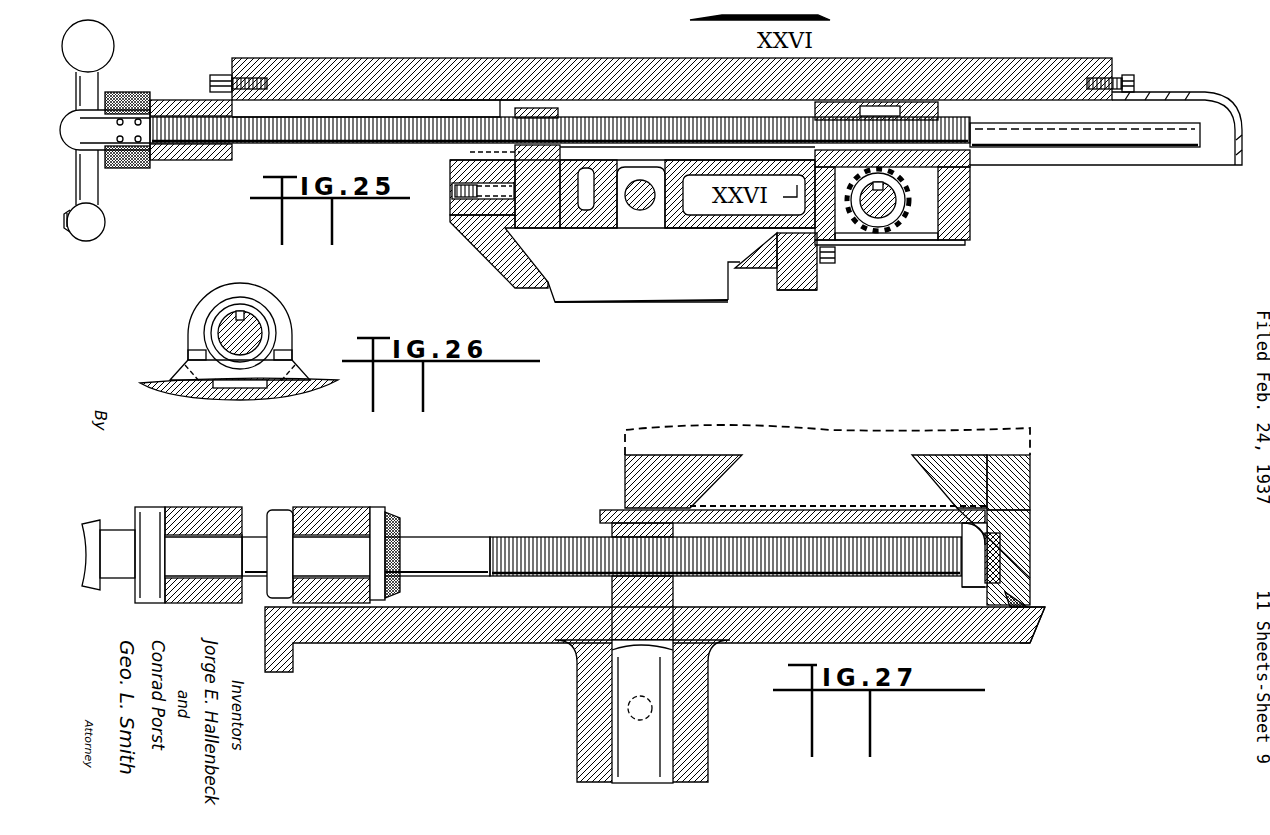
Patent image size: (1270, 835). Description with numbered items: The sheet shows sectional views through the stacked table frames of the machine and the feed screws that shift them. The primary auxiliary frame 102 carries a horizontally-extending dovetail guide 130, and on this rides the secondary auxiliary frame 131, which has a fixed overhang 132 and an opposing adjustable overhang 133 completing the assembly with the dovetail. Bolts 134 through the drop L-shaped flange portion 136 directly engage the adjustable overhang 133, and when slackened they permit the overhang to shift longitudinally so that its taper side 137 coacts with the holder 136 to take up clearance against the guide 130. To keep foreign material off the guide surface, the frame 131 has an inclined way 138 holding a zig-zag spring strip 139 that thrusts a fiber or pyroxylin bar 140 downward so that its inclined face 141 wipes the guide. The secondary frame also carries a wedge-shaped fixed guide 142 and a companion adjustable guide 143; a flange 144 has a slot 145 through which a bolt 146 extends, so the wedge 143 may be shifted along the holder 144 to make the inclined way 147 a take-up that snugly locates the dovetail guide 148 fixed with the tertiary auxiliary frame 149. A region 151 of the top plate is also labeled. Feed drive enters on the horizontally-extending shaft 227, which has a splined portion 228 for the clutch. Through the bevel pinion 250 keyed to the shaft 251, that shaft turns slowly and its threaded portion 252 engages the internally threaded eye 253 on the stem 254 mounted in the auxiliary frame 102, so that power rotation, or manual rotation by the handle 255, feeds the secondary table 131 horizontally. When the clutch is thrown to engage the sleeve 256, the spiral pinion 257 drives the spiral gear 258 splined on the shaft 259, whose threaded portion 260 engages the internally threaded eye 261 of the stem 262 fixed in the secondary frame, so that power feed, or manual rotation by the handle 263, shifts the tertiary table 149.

In FIG. 25, the auxiliary frame 102 is at (695, 293).
In FIG. 27, the auxiliary frame 102 is at (708, 665).
In FIG. 25, the dovetail guide 130 is at (730, 265).
In FIG. 25, the secondary auxiliary frame 131 is at (500, 255).
In FIG. 26, the secondary auxiliary frame 131 is at (157, 380).
In FIG. 27, the secondary auxiliary frame 131 is at (443, 598).
In FIG. 25, the fixed overhang 132 is at (550, 285).
In FIG. 25, the adjustable overhang 133 is at (815, 276).
In FIG. 25, the bolts 134 is at (838, 252).
In FIG. 25, the flange portion 136 is at (797, 288).
In FIG. 25, the taper side 137 is at (773, 238).
In FIG. 27, the inclined way 138 is at (1027, 593).
In FIG. 27, the zig-zag spring strip 139 is at (1033, 600).
In FIG. 27, the fiber or pyroxylin bar 140 is at (1033, 611).
In FIG. 27, the inclined face 141 is at (1038, 633).
In FIG. 27, the wedge-shaped fixed guide 142 is at (718, 477).
In FIG. 27, the adjustable guide 143 is at (925, 473).
In FIG. 27, the flange 144 is at (1030, 484).
In FIG. 25, the slot 145 is at (470, 153).
In FIG. 27, the slot 145 is at (1027, 504).
In FIG. 27, the bolt 146 is at (1027, 534).
In FIG. 27, the inclined way 147 is at (1030, 467).
In FIG. 27, the dovetail guide 148 is at (830, 485).
In FIG. 25, the tertiary auxiliary frame 149 is at (396, 50).
In FIG. 27, the tertiary auxiliary frame 149 is at (1030, 432).
In FIG. 25, the plate portion 151 is at (492, 52).
In FIG. 25, the horizontally-extending shaft 227 is at (905, 188).
In FIG. 25, the splined portion 228 is at (915, 204).
In FIG. 27, the bevel pinion 250 is at (398, 520).
In FIG. 27, the shaft 251 is at (462, 540).
In FIG. 27, the threaded portion 252 is at (535, 575).
In FIG. 27, the internally threaded eye 253 is at (673, 530).
In FIG. 27, the stem 254 is at (620, 685).
In FIG. 27, the handle 255 is at (98, 523).
In FIG. 25, the sleeve 256 is at (942, 180).
In FIG. 25, the spiral pinion 257 is at (915, 222).
In FIG. 25, the spiral gear 258 is at (905, 150).
In FIG. 25, the shaft 259 is at (1103, 130).
In FIG. 26, the shaft 259 is at (262, 333).
In FIG. 25, the threaded portion 260 is at (627, 112).
In FIG. 25, the internally threaded eye 261 is at (500, 108).
In FIG. 25, the stem 262 is at (537, 108).
In FIG. 25, the handle 263 is at (112, 50).